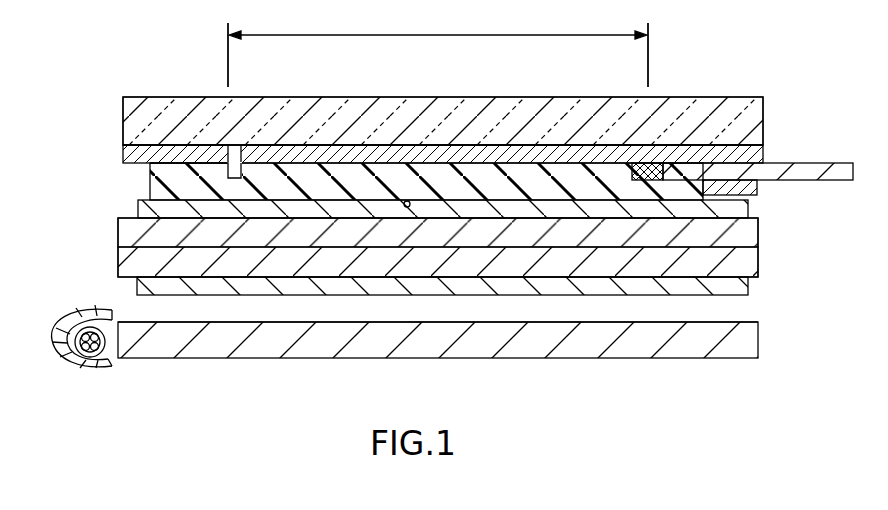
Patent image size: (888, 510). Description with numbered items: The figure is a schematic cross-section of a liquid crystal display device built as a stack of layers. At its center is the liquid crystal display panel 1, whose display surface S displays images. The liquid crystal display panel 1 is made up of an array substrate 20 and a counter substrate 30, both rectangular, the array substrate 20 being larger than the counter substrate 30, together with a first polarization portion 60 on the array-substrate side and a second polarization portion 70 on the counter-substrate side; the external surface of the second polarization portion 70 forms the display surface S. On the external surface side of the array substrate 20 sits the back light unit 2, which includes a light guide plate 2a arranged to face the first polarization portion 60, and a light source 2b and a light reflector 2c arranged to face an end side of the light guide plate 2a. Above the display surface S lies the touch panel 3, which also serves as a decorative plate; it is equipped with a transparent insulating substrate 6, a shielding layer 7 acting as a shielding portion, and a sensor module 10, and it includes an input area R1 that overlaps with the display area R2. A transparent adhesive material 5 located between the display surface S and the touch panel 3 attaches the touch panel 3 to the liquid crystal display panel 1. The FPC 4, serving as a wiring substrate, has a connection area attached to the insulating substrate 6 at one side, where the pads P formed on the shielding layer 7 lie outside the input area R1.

The liquid crystal display panel 1 is at (481, 301).
The back light unit 2 is at (440, 364).
The light guide plate 2a is at (203, 325).
The light source 2b is at (108, 358).
The light reflector 2c is at (58, 357).
The touch panel 3 is at (469, 115).
The FPC (flexible printed circuits) 4 is at (759, 119).
The adhesive material 5 is at (748, 200).
The transparent insulating substrate 6 is at (123, 123).
The shielding layer 7 is at (123, 154).
The sensor module 10 is at (423, 147).
The array substrate 20 is at (485, 262).
The counter substrate 30 is at (571, 237).
The first polarization portion 60 is at (238, 286).
The second polarization portion 70 is at (308, 209).
The display surface S is at (407, 207).
The terminal pad P is at (708, 163).
The input area R1 is at (438, 49).
The display area R2 is at (438, 55).